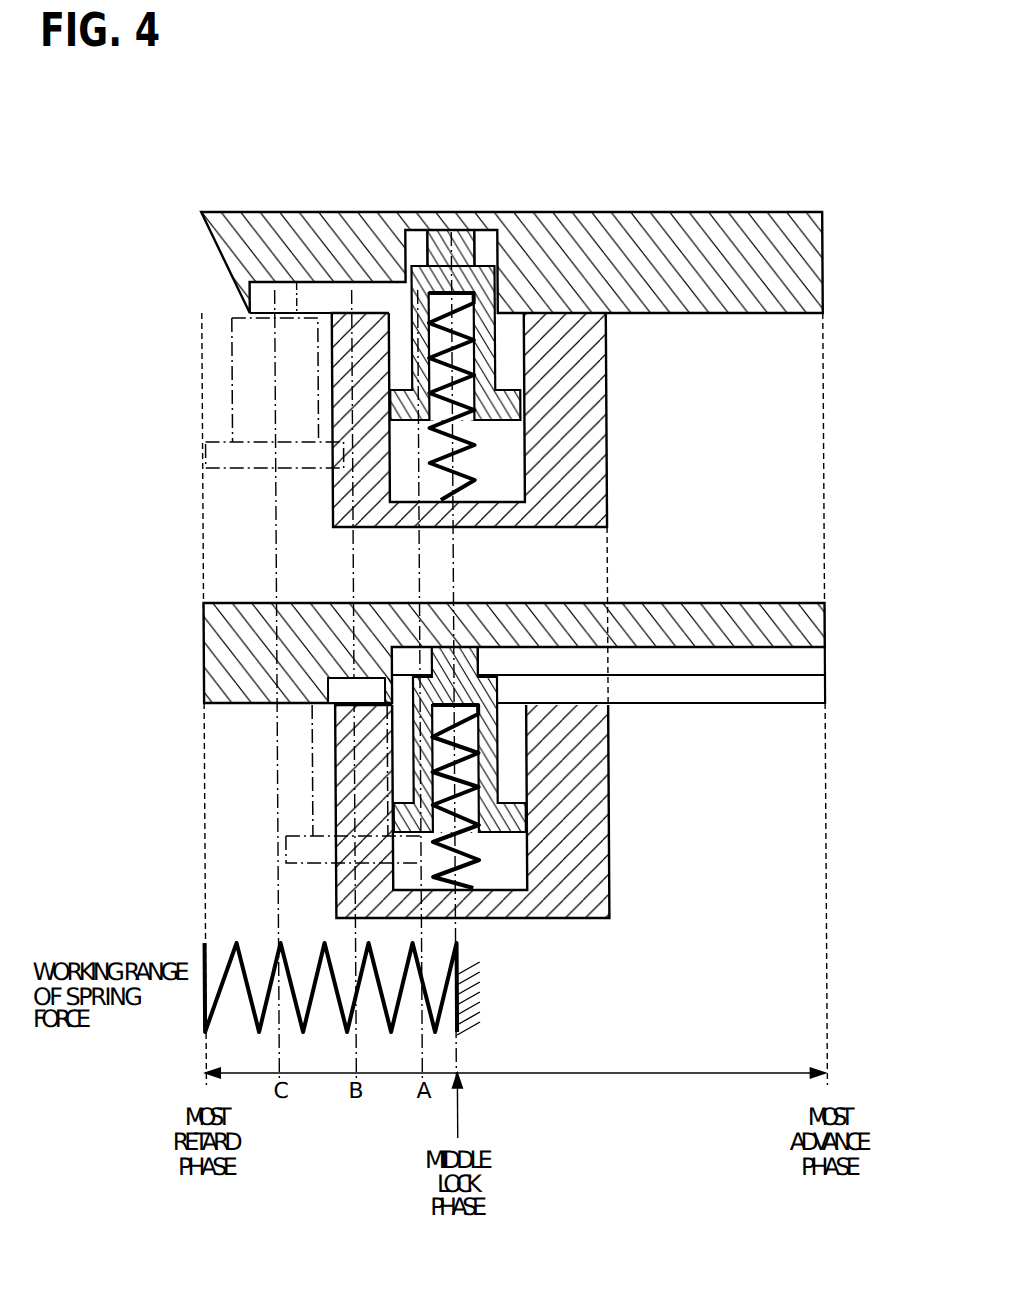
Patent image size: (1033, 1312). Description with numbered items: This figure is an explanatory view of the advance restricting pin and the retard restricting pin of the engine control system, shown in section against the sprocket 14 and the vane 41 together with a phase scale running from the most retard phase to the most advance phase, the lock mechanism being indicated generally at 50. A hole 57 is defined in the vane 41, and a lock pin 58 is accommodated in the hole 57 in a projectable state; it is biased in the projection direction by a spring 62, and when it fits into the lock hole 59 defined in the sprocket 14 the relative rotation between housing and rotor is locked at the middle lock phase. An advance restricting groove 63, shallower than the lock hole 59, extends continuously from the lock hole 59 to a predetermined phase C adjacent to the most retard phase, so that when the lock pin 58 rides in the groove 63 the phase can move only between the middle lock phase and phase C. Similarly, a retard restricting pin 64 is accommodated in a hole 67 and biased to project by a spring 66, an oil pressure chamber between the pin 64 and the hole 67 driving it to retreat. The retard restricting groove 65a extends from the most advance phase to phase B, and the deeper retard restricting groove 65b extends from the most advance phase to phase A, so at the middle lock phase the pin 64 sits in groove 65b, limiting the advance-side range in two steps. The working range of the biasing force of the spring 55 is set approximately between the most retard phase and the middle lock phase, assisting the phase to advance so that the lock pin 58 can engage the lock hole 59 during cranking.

The sprocket 14 is at (668, 212).
The vane 41 is at (607, 410).
The lock mechanism 50 is at (448, 212).
The spring 55 is at (244, 970).
The hole 57 is at (526, 362).
The lock pin 58 is at (410, 242).
The lock hole 59 is at (490, 242).
The spring 62 is at (460, 442).
The advance restricting groove 63 is at (323, 288).
The retard restricting pin 64 is at (476, 662).
The retard restricting groove 65a is at (346, 746).
The retard restricting groove 65b is at (723, 648).
The spring 66 is at (458, 883).
The hole 67 is at (520, 750).